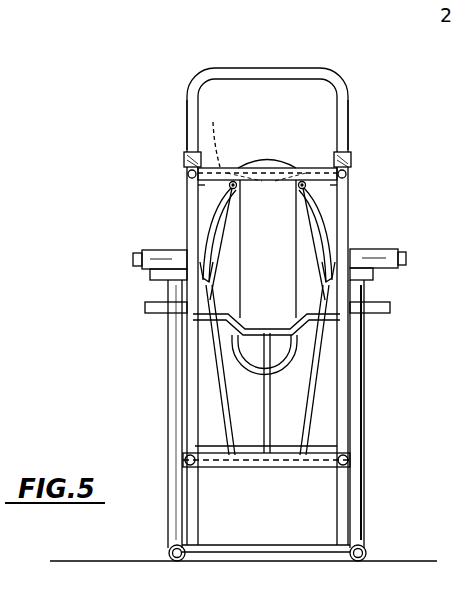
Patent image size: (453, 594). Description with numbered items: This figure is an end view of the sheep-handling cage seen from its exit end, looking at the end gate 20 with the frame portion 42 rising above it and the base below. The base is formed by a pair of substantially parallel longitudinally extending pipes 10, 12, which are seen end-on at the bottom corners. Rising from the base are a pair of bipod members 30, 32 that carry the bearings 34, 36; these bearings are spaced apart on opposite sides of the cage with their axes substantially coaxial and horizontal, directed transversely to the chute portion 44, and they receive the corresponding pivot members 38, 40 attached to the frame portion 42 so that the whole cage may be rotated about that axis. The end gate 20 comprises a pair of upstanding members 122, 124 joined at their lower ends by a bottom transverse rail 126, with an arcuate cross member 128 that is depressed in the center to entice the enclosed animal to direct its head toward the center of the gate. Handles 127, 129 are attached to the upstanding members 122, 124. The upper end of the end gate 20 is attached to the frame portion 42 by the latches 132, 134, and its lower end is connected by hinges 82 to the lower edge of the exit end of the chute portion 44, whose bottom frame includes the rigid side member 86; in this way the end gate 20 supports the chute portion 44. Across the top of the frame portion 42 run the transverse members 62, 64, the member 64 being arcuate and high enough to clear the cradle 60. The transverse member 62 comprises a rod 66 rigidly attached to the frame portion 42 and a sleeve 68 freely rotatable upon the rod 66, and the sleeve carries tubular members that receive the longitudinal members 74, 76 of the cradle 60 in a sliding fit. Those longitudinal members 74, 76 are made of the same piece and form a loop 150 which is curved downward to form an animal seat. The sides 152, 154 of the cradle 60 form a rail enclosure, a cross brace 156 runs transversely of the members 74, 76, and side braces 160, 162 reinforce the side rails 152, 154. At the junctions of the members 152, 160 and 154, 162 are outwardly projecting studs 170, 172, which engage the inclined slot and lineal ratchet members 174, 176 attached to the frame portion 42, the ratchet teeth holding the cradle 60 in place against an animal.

The longitudinally extending pipe 10 is at (367, 555).
The longitudinally extending pipe 12 is at (170, 549).
The end gate 20 is at (271, 422).
The bipod member 30 is at (168, 407).
The bipod member 32 is at (355, 396).
The bearing 34 is at (150, 273).
The bearing 36 is at (376, 270).
The pivot member 38 is at (133, 258).
The pivot member 40 is at (406, 258).
The frame portion 42 is at (186, 97).
The chute portion 44 is at (250, 468).
The cradle 60 is at (241, 265).
The transverse member 62 is at (262, 165).
The transverse member 64 is at (279, 68).
The rod 66 is at (218, 143).
The sleeve 68 is at (323, 167).
The longitudinal member 74 is at (237, 188).
The longitudinal member 76 is at (298, 188).
The hinge 82 is at (184, 462).
The rigid side member 86 is at (315, 464).
The upstanding member 122 is at (348, 227).
The upstanding member 124 is at (192, 228).
The bottom transverse rail 126 is at (280, 453).
The handle 127 is at (390, 310).
The arcuate cross member 128 is at (252, 323).
The handle 129 is at (145, 310).
The latch 132 is at (352, 153).
The latch 134 is at (183, 158).
The loop 150 is at (296, 352).
The side 152 is at (312, 222).
The side 154 is at (222, 216).
The cross brace 156 is at (272, 167).
The side brace 160 is at (318, 200).
The side brace 162 is at (198, 187).
The stud 170 is at (333, 270).
The stud 172 is at (203, 265).
The slot and lineal ratchet member 174 is at (337, 106).
The slot and lineal ratchet member 176 is at (200, 118).